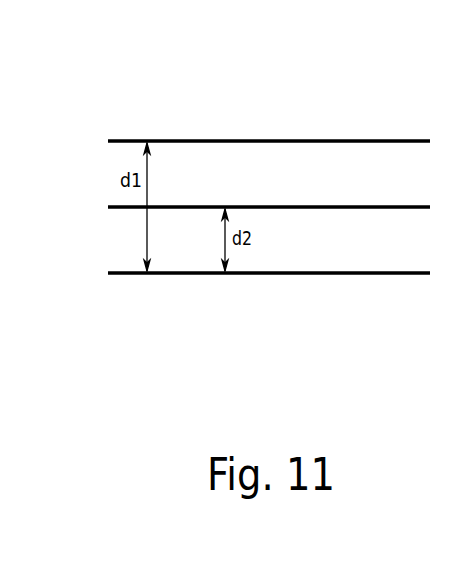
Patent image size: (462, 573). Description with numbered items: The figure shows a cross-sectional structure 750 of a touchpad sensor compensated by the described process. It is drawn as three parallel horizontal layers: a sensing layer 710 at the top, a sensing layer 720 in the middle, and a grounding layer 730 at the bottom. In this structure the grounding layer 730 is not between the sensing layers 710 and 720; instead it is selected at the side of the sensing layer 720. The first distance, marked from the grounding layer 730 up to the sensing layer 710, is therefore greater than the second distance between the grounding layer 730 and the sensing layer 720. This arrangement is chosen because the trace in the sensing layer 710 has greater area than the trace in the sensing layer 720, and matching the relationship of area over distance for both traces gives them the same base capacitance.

The cross-sectional structure 750 is at (284, 68).
The sensing layer 710 is at (343, 139).
The sensing layer 720 is at (310, 205).
The grounding layer 730 is at (290, 275).